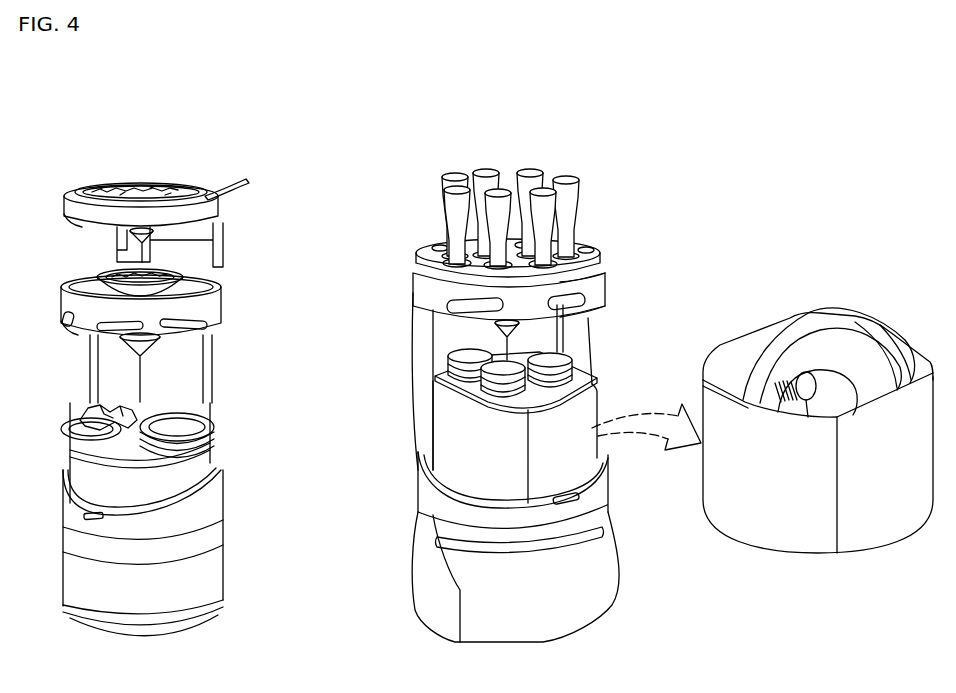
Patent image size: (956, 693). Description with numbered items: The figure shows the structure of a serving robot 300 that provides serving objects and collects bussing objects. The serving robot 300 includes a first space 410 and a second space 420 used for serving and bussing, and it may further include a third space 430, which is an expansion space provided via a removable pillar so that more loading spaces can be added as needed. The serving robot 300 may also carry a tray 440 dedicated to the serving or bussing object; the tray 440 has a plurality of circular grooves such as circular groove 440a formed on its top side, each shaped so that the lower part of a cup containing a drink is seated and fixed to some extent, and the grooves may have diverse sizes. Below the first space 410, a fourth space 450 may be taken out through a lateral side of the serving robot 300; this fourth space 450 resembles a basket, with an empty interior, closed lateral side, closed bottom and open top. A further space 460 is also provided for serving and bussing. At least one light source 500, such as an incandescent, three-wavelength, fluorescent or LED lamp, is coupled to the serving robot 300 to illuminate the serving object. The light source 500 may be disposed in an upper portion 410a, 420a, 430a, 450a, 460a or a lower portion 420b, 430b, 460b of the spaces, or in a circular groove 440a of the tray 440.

The serving robot 300 is at (68, 91).
The first space 410 is at (207, 455).
The upper portion of the first space 410a is at (137, 458).
The second space 420 is at (217, 317).
The upper portion of the second space 420a is at (217, 288).
The lower portion of the second space 420b is at (72, 335).
The third space 430 is at (218, 213).
The upper portion of the third space 430a is at (213, 201).
The lower portion of the third space 430b is at (70, 226).
The tray 440 is at (430, 266).
The circular groove 440a is at (587, 239).
The fourth space 450 is at (453, 440).
The upper portion of the fourth space 450a is at (465, 392).
The space 460 is at (597, 290).
The upper portion of the space 460a is at (597, 271).
The lower portion of the space 460b is at (583, 313).
The light source 500 is at (150, 237).